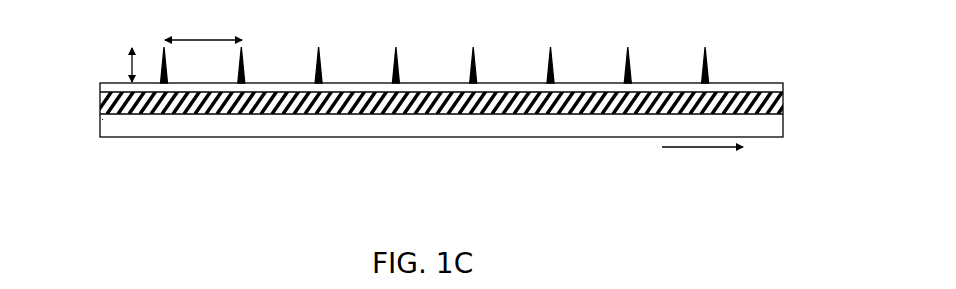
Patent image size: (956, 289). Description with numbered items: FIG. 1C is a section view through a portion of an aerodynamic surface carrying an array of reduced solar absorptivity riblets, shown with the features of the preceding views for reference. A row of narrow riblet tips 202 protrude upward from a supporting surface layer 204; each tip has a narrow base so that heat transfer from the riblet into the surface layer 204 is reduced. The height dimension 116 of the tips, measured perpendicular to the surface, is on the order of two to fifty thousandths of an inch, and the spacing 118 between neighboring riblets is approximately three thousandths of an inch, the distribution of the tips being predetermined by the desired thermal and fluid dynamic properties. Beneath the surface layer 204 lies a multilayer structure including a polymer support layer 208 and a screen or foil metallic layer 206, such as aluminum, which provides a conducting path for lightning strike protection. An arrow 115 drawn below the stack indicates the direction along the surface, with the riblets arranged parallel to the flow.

The direction of movement 115 is at (708, 148).
The height dimension 116 is at (120, 66).
The spacing 118 is at (174, 41).
The riblet tips 202 is at (320, 63).
The surface layer 204 is at (415, 92).
The metallic layer 206 is at (776, 137).
The polymer support layer 208 is at (784, 110).